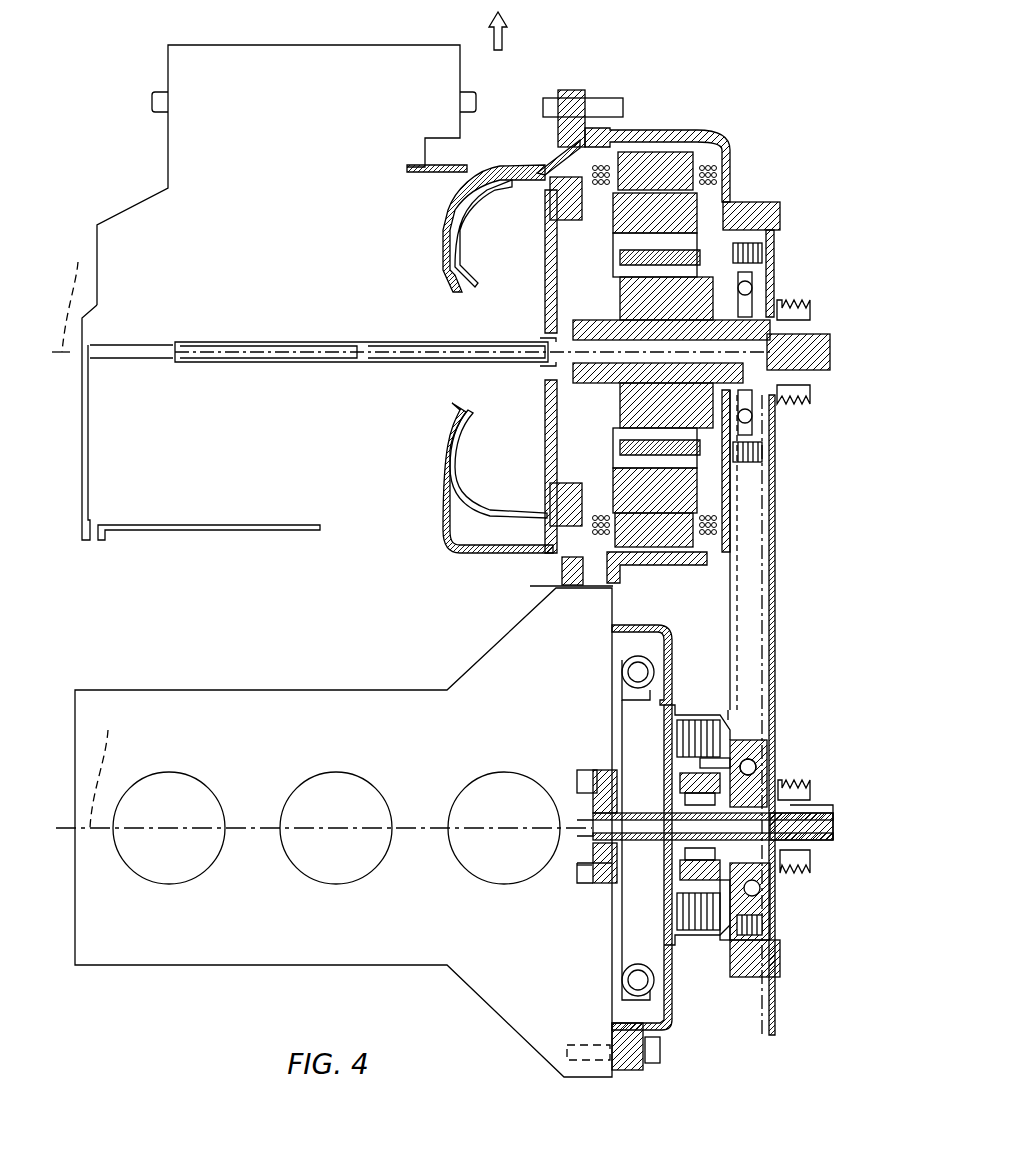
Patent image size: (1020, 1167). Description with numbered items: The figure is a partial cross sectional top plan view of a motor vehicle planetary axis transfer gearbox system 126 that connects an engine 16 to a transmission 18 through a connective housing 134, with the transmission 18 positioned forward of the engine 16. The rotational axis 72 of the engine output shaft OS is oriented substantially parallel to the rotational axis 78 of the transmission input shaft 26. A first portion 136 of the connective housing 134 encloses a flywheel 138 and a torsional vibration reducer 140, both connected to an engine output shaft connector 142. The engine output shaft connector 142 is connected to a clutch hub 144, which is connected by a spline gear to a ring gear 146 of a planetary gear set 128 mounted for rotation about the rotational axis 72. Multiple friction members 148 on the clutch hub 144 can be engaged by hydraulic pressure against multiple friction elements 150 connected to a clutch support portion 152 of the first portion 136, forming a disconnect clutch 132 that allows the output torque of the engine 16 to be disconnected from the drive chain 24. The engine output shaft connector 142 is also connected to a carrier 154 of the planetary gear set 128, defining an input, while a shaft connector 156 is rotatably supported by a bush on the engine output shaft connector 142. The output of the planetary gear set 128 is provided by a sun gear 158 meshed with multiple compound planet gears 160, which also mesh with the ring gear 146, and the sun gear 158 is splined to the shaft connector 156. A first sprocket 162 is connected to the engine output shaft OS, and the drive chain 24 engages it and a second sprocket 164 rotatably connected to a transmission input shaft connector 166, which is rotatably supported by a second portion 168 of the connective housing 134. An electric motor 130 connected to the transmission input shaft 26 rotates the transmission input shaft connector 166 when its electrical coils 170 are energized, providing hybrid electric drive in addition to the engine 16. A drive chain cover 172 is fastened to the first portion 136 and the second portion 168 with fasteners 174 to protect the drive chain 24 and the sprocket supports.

The transmission 18 is at (553, 58).
The motor vehicle planetary axis transfer gearbox system 126 is at (746, 84).
The connective housing 134 is at (655, 128).
The electrical coils 170 is at (727, 177).
The electric motor 130 is at (713, 207).
The fasteners 174 is at (780, 220).
The second sprocket 164 is at (762, 255).
The transmission input shaft connector 166 is at (750, 330).
The second portion 168 is at (727, 500).
The drive chain cover 172 is at (775, 530).
The drive chain 24 is at (762, 555).
The transmission input shaft 26 is at (320, 338).
The rotational axis of transmission input shaft 78 is at (67, 291).
The engine 16 is at (272, 690).
The rotational axis of engine 72 is at (106, 767).
The first portion 136 is at (640, 623).
The flywheel 138 is at (622, 672).
The torsional vibration reducer 140 is at (640, 698).
The engine output shaft connector 142 is at (606, 800).
The clutch support portion 152 is at (695, 718).
The friction elements 150 is at (707, 720).
The disconnect clutch 132 is at (730, 717).
The ring gear 146 is at (722, 765).
The first sprocket 162 is at (730, 762).
The planetary gear set 128 is at (756, 767).
The carrier 154 is at (720, 783).
The shaft connector 156 is at (810, 820).
The sun gear 158 is at (790, 862).
The compound planet gears 160 is at (760, 888).
The clutch hub 144 is at (757, 902).
The friction members 148 is at (762, 928).
The engine output shaft OS is at (590, 866).